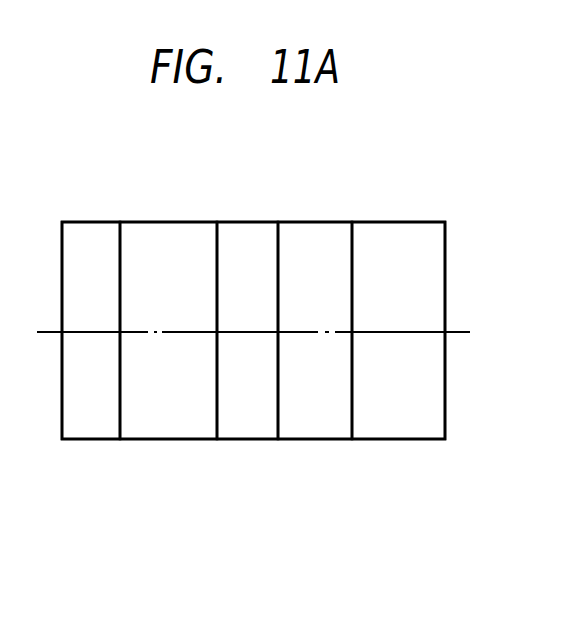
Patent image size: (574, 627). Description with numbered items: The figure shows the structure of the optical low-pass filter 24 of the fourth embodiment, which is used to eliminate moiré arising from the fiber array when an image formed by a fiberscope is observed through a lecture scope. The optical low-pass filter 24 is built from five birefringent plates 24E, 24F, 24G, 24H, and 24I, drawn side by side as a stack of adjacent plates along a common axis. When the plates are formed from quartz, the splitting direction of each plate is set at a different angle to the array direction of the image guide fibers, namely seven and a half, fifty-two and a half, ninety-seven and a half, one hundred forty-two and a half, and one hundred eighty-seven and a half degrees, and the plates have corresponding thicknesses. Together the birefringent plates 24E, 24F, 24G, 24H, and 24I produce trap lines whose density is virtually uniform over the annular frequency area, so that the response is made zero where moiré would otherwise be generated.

The optical low-pass filter 24 is at (453, 160).
The birefringent plate 24E is at (88, 229).
The birefringent plate 24F is at (172, 229).
The birefringent plate 24G is at (238, 229).
The birefringent plate 24H is at (322, 230).
The birefringent plate 24I is at (405, 230).